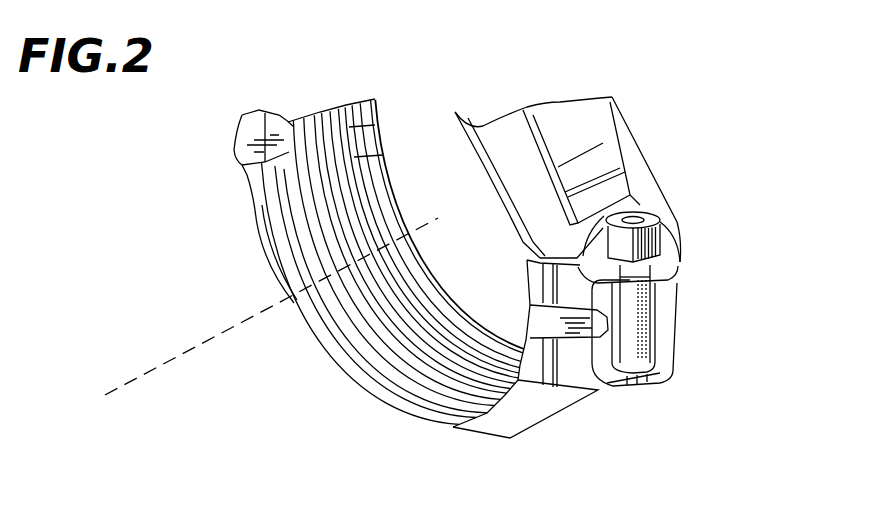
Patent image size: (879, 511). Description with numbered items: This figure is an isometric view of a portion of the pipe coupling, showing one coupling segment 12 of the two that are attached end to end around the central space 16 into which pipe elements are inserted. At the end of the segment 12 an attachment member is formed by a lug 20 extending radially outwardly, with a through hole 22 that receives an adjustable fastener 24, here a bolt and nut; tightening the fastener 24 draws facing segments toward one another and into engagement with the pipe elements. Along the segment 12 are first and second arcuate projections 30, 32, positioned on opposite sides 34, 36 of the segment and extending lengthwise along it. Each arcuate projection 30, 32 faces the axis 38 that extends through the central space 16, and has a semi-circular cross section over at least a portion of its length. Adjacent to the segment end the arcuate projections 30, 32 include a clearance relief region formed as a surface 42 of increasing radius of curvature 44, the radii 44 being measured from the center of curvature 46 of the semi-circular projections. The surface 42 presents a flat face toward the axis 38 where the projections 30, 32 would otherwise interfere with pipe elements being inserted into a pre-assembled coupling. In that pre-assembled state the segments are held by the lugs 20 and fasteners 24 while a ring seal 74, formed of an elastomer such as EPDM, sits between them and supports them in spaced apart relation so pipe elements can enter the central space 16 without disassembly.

The segment 12 is at (463, 430).
The central space 16 is at (277, 193).
The lug 20 is at (670, 357).
The through hole 22 is at (610, 392).
The adjustable fastener 24 is at (632, 298).
The first arcuate projection 30 is at (360, 370).
The second arcuate projection 32 is at (453, 293).
The first side of segment 34 is at (393, 403).
The second side of segment 36 is at (485, 320).
The axis 38 is at (138, 375).
The clearance relief surface 42 is at (268, 174).
The radius of curvature 44 is at (382, 224).
The center of curvature 46 is at (415, 234).
The ring seal 74 is at (380, 318).